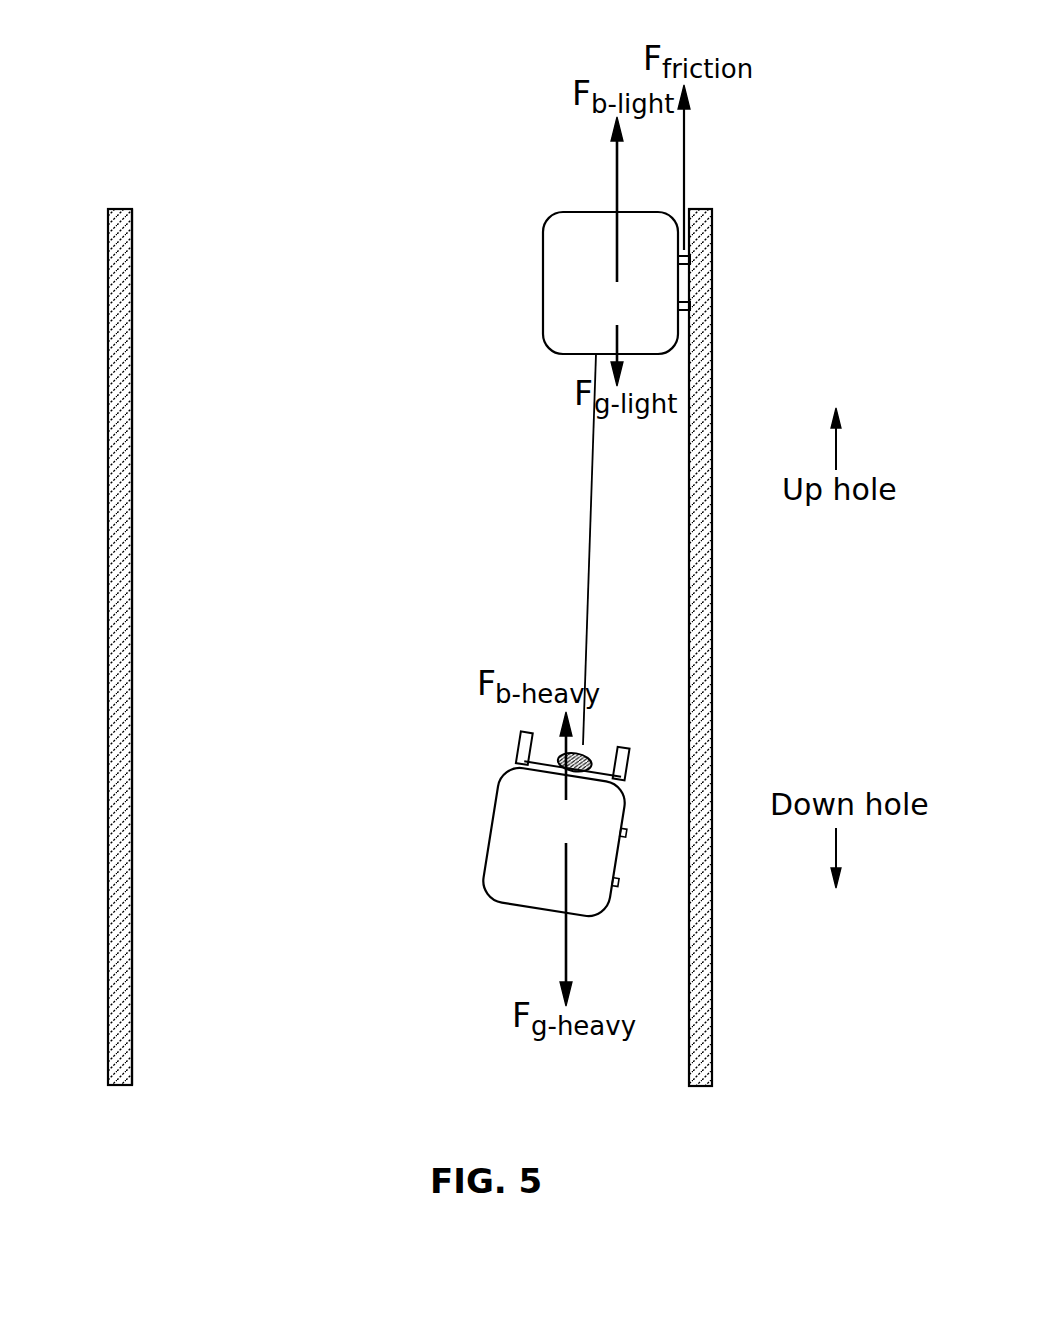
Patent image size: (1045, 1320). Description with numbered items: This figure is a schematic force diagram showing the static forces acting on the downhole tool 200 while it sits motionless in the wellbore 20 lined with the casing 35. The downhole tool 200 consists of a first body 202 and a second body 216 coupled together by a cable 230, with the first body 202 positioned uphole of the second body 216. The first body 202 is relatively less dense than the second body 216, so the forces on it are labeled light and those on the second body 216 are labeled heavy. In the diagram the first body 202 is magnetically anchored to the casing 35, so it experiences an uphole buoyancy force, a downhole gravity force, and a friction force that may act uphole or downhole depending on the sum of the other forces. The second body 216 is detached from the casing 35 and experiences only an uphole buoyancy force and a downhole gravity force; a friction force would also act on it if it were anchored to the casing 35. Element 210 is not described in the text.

The wellbore 20 is at (108, 322).
The casing 35 is at (133, 258).
The downhole tool 200 is at (408, 512).
The first body 202 is at (553, 260).
The friction pads / centralizer 210 is at (692, 318).
The second body 216 is at (505, 852).
The cable 230 is at (588, 517).